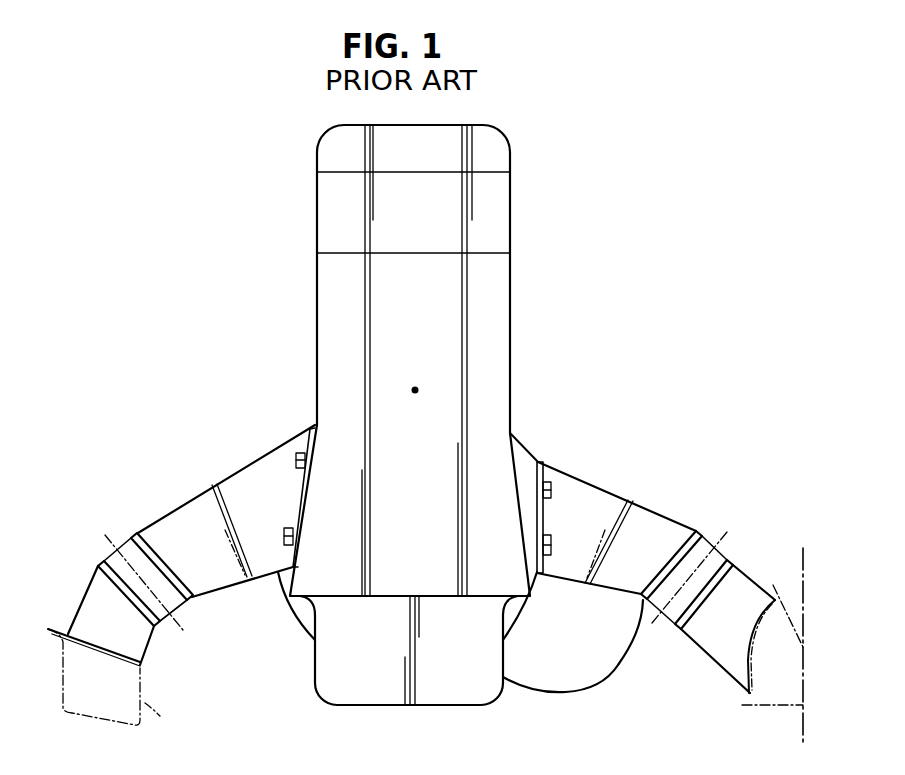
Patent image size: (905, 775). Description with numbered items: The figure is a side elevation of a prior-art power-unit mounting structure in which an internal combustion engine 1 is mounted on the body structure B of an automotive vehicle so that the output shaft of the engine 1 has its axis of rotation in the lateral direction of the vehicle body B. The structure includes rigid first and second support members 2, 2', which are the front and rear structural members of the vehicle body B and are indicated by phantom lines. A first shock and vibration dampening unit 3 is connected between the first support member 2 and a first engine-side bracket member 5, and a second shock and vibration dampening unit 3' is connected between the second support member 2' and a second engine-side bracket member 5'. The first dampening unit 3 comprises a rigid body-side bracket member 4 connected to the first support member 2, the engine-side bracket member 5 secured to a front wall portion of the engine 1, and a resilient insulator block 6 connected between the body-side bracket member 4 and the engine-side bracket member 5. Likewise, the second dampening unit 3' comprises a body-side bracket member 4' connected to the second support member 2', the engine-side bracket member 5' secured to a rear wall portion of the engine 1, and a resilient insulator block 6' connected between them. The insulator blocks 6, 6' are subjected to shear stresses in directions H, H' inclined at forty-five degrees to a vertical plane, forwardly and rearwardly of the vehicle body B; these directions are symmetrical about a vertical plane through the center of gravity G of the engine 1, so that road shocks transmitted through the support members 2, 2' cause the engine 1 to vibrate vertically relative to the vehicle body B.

The internal combustion engine 1 is at (520, 178).
The center of gravity G is at (414, 386).
The first shock and vibration dampening unit 3 is at (223, 512).
The first engine-side bracket member 5 is at (279, 496).
The direction of shear stress H is at (145, 569).
The resilient insulator block 6 is at (138, 606).
The body-side bracket member 4 is at (101, 616).
The first support member 2 is at (108, 677).
The second engine-side bracket member 5' is at (551, 503).
The second shock and vibration dampening unit 3' is at (619, 523).
The direction of shear stress H' is at (687, 566).
The resilient insulator block 6' is at (692, 606).
The body-side bracket member 4' is at (728, 619).
The body structure of the vehicle B is at (803, 570).
The second support member 2' is at (772, 725).